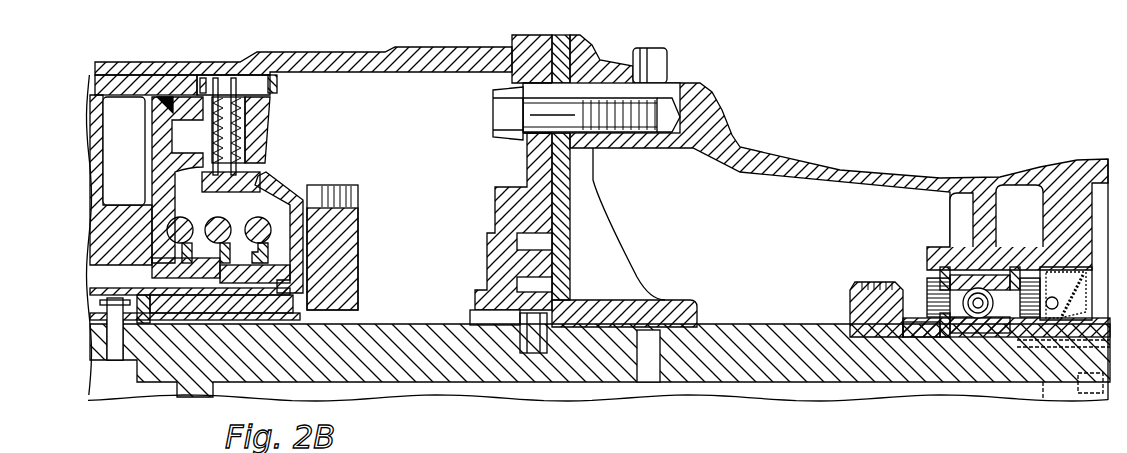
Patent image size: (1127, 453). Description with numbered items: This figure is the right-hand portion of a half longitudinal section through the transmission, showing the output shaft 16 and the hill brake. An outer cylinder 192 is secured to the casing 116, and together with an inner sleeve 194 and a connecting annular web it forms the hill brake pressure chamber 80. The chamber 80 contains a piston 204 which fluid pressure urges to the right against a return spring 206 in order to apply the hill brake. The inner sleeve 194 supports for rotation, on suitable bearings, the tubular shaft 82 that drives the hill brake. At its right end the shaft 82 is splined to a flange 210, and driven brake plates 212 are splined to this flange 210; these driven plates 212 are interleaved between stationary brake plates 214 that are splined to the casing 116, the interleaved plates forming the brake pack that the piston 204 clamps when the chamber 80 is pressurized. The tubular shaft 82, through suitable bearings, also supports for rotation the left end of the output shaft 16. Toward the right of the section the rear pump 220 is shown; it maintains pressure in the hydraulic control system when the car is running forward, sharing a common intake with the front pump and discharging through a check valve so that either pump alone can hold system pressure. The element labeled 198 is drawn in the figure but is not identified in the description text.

The output shaft 16 is at (95, 346).
The hill brake pressure chamber 80 is at (162, 96).
The tubular shaft 82 is at (92, 316).
The casing 116 is at (286, 60).
The outer cylinder 192 is at (120, 74).
The inner sleeve 194 is at (155, 283).
The housing wall 198 is at (88, 188).
The piston 204 is at (165, 148).
The return spring 206 is at (242, 224).
The flange 210 is at (276, 196).
The driven brake plates 212 is at (258, 175).
The stationary brake plates 214 is at (274, 90).
The rear pump 220 is at (497, 222).